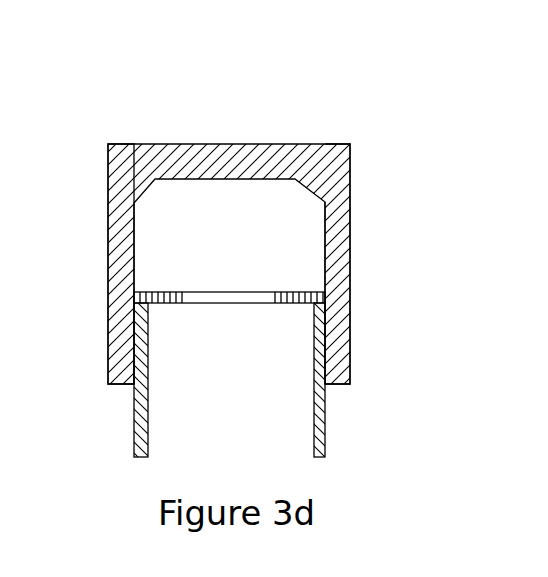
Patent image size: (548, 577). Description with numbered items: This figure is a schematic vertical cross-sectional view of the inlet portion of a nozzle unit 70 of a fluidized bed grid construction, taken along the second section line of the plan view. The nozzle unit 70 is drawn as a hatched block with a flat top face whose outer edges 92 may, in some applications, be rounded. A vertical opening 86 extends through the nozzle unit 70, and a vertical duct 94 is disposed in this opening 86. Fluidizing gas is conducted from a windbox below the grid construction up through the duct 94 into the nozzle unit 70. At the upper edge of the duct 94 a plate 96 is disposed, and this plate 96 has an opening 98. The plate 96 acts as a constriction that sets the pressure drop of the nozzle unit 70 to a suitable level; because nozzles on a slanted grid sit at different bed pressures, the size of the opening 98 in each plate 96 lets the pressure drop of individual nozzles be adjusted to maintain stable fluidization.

The nozzle unit 70 is at (260, 145).
The outer edges 92 is at (118, 145).
The vertical opening 86 is at (325, 272).
The plate 96 is at (160, 292).
The opening 98 is at (207, 300).
The vertical duct 94 is at (326, 403).